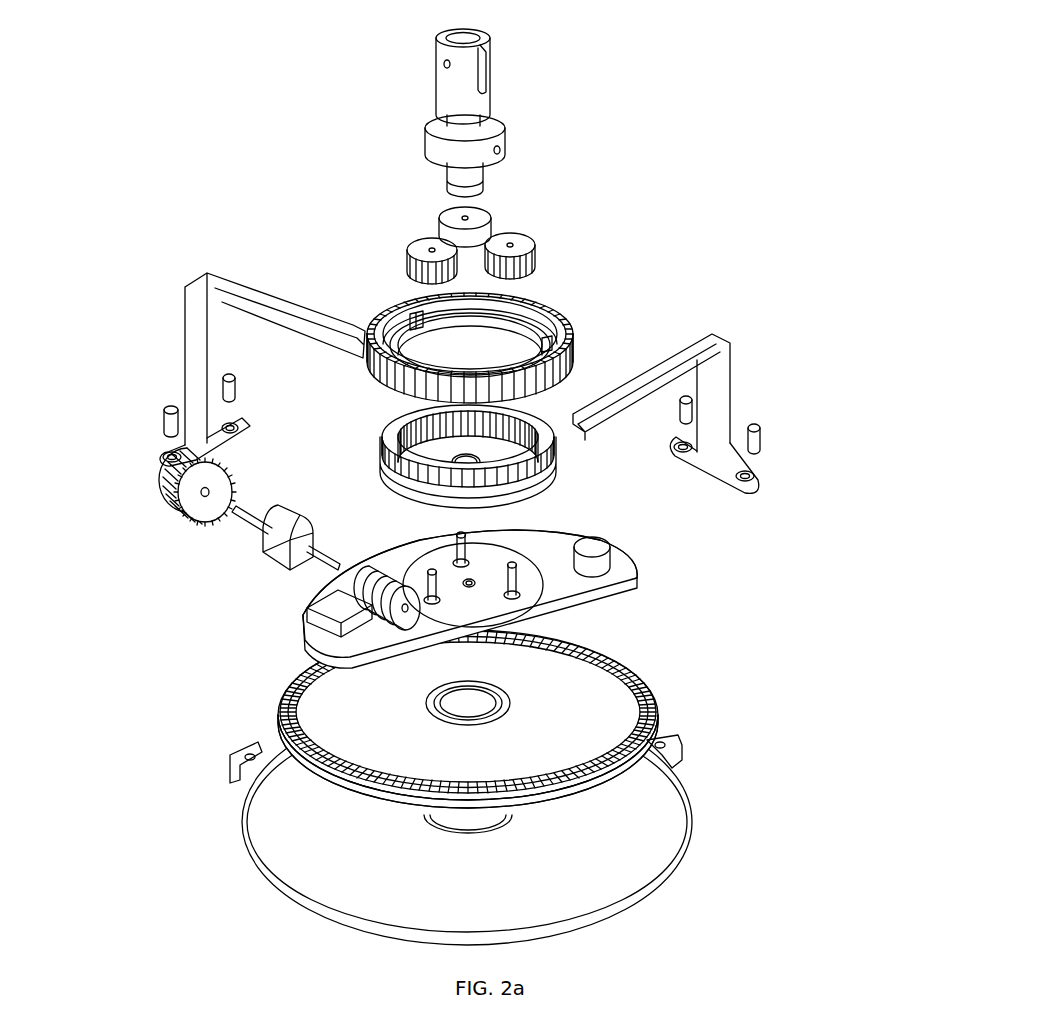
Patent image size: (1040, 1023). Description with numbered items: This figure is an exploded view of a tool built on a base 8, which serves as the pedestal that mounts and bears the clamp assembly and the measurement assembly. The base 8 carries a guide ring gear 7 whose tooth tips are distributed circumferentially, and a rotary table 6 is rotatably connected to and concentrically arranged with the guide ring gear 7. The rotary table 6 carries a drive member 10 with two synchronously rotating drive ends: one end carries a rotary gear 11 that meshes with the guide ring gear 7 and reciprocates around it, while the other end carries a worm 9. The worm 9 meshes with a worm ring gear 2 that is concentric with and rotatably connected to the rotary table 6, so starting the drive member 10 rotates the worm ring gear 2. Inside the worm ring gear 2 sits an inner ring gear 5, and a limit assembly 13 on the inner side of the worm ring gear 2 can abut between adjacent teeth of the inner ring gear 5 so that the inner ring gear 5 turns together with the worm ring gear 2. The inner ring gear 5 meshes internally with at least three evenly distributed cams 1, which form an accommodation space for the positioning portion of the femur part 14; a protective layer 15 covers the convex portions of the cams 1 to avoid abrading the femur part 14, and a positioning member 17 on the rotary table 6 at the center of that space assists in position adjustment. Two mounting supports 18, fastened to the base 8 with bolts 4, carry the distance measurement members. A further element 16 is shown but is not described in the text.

The cams 1 is at (533, 235).
The worm ring gear 2 is at (572, 343).
The bolts 4 is at (168, 430).
The inner ring gear 5 is at (540, 482).
The rotary table 6 is at (617, 606).
The guide ring gear 7 is at (657, 753).
The base 8 is at (658, 839).
The worm 9 is at (395, 628).
The drive member 10 is at (262, 543).
The rotary gear 11 is at (172, 497).
The limit assembly 13 is at (372, 310).
The femur part 14 is at (500, 133).
The protective layer 15 is at (495, 222).
The cylinder post 16 is at (607, 569).
The positioning member 17 is at (476, 587).
The mounting supports 18 is at (185, 378).